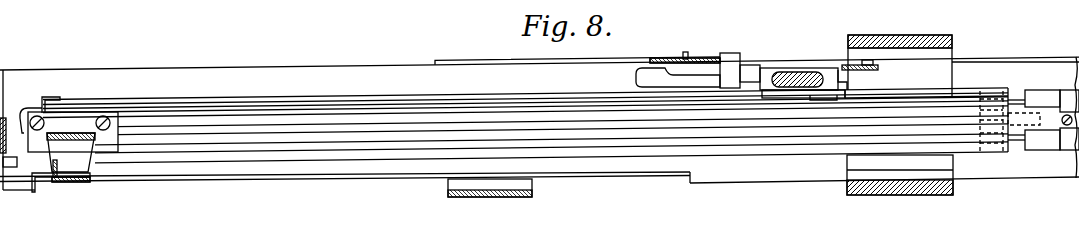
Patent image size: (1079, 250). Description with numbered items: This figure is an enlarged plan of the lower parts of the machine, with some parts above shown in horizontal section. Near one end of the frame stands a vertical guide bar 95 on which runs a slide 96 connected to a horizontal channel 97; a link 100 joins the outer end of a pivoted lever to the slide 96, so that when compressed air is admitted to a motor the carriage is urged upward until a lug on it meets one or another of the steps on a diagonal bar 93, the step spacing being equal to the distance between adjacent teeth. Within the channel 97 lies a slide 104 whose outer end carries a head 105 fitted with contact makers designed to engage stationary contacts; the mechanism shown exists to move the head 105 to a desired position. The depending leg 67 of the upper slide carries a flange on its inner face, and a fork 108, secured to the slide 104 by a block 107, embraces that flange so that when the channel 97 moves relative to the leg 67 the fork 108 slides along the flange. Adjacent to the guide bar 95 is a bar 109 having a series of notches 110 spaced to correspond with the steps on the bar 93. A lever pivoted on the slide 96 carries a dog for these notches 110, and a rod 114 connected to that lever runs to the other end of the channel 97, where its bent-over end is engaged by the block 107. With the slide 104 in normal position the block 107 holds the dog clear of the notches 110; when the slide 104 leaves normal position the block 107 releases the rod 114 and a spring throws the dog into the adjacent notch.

The depending leg 67 is at (83, 182).
The diagonal bar 93 is at (668, 59).
The vertical guide bar 95 is at (800, 72).
The slide 96 is at (765, 68).
The horizontal channel 97 is at (790, 149).
The link 100 is at (626, 82).
The slide 104 is at (258, 133).
The head 105 is at (1067, 93).
The block 107 is at (72, 123).
The fork 108 is at (83, 162).
The bar 109 is at (877, 58).
The notches 110 is at (842, 64).
The rod 114 is at (217, 110).